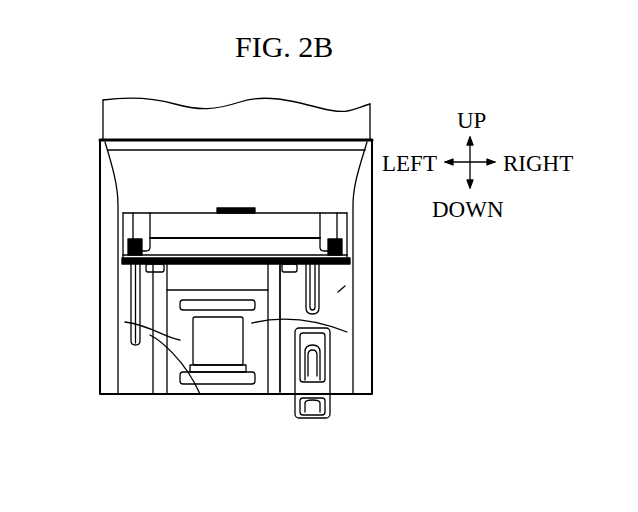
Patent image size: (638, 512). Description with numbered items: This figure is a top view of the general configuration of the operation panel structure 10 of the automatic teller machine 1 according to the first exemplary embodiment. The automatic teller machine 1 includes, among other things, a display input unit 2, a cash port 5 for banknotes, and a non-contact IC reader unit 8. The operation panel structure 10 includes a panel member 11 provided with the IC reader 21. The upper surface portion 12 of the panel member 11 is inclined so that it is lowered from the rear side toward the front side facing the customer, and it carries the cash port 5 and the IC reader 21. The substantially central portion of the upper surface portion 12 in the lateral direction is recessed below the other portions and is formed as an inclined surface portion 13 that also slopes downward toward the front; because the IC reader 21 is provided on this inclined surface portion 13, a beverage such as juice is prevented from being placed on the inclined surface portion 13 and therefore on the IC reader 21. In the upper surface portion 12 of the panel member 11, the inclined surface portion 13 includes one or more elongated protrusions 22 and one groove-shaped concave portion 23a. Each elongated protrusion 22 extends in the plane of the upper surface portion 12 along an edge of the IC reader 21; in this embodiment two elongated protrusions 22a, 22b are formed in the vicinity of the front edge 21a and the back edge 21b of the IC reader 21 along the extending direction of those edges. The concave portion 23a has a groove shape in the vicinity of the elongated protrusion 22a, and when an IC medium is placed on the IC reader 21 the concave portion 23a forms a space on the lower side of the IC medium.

The automatic teller machine 1 is at (85, 162).
The display input unit 2 is at (173, 225).
The cash port 5 is at (178, 278).
The operation panel structure 10 is at (125, 299).
The panel member 11 is at (337, 284).
The upper surface portion 12 is at (338, 292).
The inclined surface portion 13 is at (332, 328).
The IC reader 21 is at (213, 323).
The front edge 21a is at (205, 342).
The back edge 21b is at (140, 318).
The elongated protrusion 22 is at (306, 440).
The elongated protrusion 22a is at (222, 384).
The elongated protrusion 22b is at (280, 392).
The groove-shaped concave portion 23a is at (183, 384).
The non-contact IC reader unit 8 is at (211, 356).